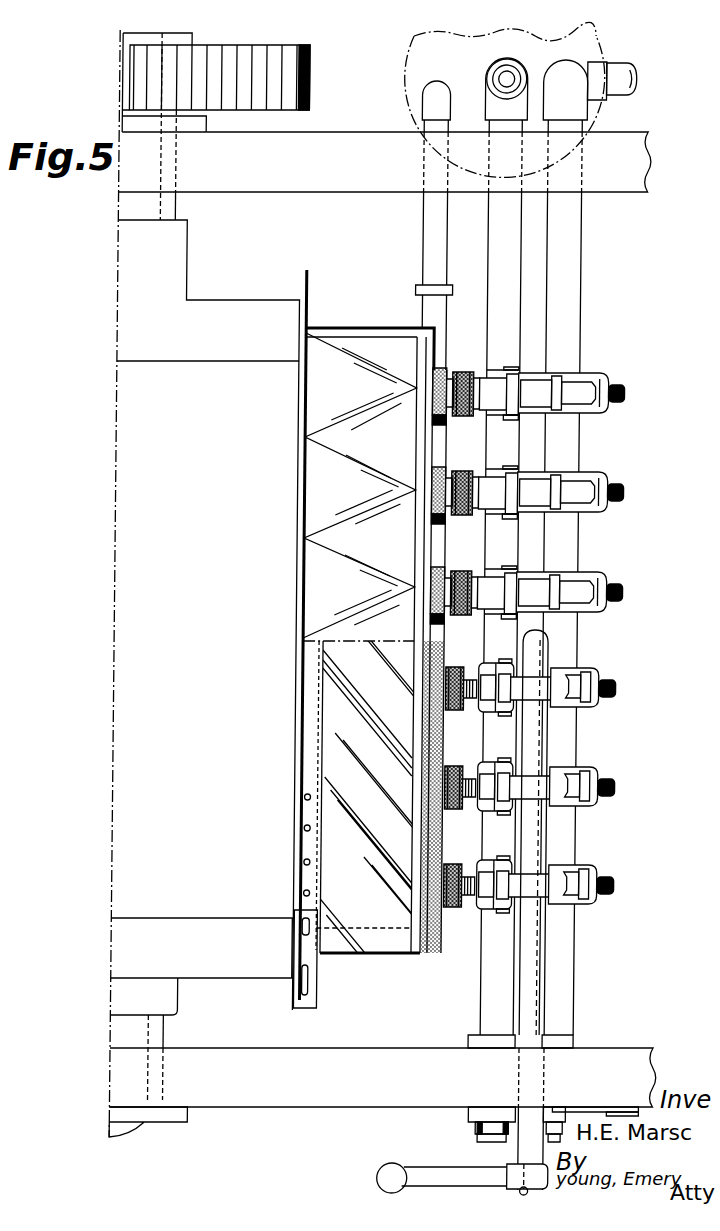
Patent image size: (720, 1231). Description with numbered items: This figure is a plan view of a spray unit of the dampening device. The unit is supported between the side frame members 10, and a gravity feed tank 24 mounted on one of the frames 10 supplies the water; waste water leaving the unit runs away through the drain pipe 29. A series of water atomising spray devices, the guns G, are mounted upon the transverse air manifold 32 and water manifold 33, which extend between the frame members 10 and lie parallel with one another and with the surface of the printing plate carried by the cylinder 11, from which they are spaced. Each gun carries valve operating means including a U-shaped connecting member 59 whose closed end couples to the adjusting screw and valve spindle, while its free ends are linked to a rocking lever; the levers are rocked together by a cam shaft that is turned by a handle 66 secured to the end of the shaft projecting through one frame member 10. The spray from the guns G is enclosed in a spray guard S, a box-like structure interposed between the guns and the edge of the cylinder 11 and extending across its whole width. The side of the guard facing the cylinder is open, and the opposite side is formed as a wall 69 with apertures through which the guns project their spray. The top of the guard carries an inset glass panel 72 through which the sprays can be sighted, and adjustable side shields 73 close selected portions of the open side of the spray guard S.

The frame members 10 is at (326, 155).
The printing plate cylinder 11 is at (209, 583).
The gravity feed tank 24 is at (405, 62).
The drain pipe 29 is at (430, 258).
The air manifold 32 is at (558, 318).
The water manifold 33 is at (502, 277).
The U-shaped connecting member 59 is at (501, 907).
The handle 66 is at (408, 1168).
The wall 69 is at (420, 547).
The glass panel 72 is at (342, 763).
The side shields 73 is at (321, 913).
The guns G is at (555, 468).
The spray guard S is at (372, 648).